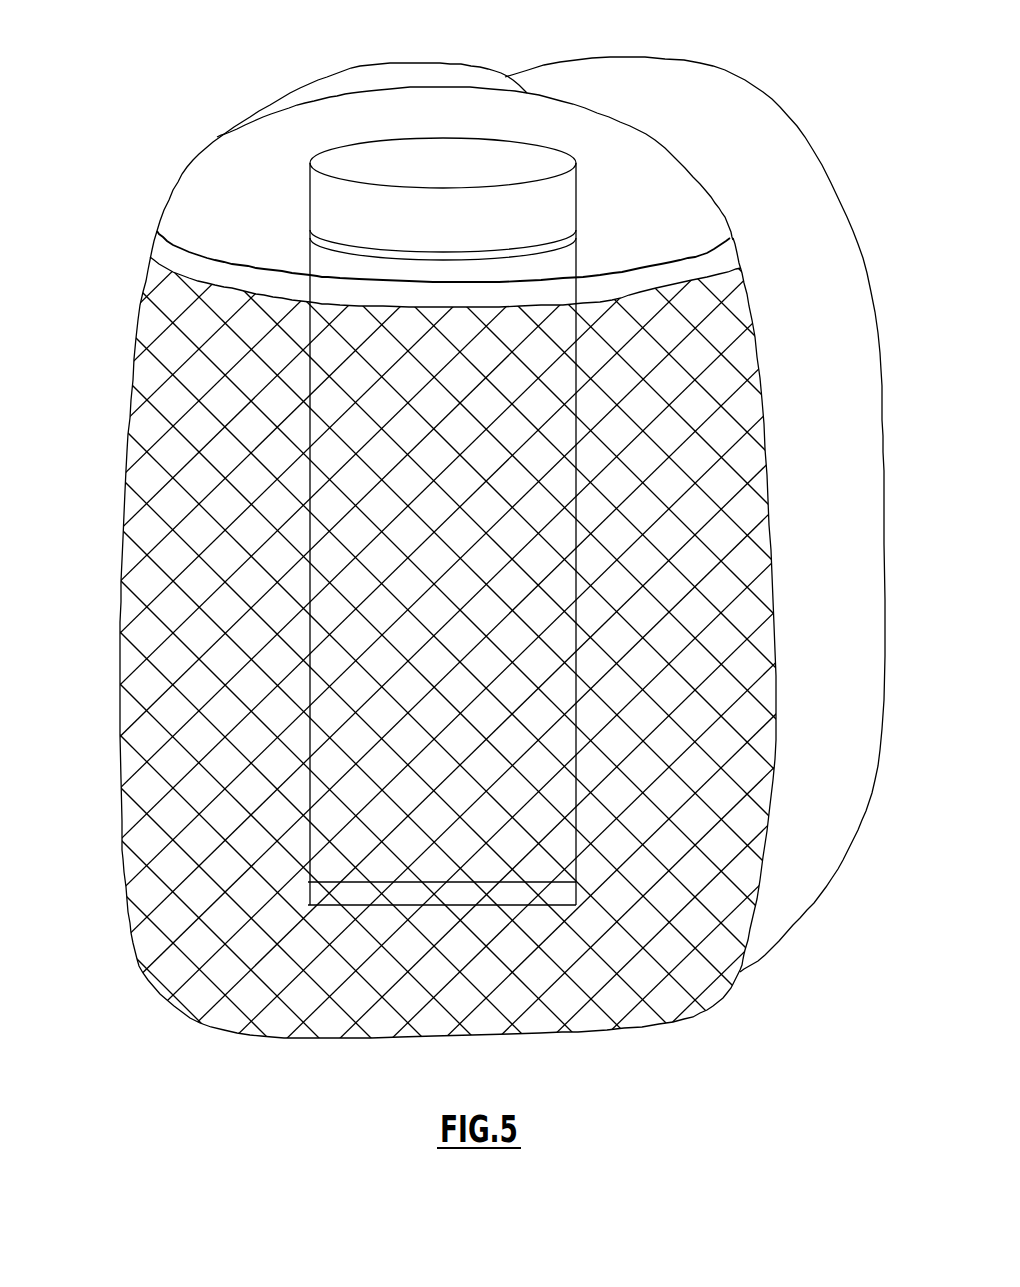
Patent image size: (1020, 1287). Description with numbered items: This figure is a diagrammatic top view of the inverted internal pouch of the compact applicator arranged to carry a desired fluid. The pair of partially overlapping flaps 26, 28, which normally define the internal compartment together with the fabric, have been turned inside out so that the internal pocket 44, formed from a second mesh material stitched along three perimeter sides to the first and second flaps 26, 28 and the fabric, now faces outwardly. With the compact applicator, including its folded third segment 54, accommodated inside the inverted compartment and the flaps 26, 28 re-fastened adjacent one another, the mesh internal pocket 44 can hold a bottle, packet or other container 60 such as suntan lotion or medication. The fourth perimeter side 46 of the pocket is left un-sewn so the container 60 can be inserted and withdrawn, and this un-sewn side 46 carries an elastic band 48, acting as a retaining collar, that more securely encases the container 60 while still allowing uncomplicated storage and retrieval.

The first flap 26 is at (370, 78).
The second flap 28 is at (853, 510).
The internal pocket 44 is at (128, 372).
The fourth perimeter side 46 is at (657, 260).
The elastic band 48 is at (170, 255).
The third segment 54 is at (640, 148).
The container 60 is at (422, 162).